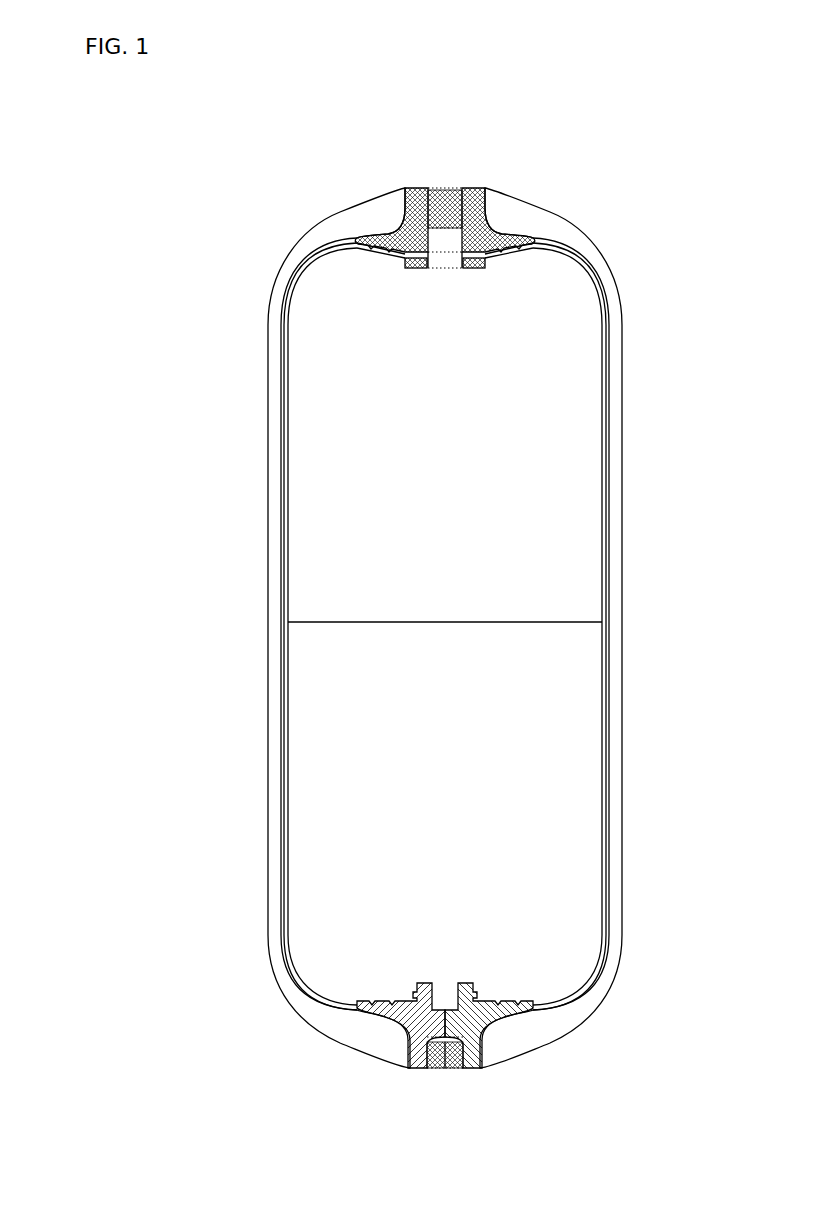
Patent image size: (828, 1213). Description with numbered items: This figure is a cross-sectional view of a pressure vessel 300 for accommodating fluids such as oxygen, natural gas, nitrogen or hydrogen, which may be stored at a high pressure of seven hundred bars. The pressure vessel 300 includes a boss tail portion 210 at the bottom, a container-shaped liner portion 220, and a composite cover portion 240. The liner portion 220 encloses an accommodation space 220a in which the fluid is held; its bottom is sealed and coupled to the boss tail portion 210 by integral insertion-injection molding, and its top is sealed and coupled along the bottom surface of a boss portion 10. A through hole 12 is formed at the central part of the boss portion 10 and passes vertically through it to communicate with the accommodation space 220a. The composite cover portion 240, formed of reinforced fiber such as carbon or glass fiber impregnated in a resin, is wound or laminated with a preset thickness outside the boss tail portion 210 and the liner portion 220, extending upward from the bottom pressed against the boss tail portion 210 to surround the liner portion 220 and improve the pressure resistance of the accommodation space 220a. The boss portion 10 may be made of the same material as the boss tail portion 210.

The pressure vessel 300 is at (216, 214).
The boss portion 10 is at (477, 184).
The through hole 12 is at (450, 203).
The liner portion 220 is at (352, 1005).
The accommodation space 220a is at (401, 451).
The composite cover portion 240 is at (564, 1037).
The boss tail portion 210 is at (478, 1068).